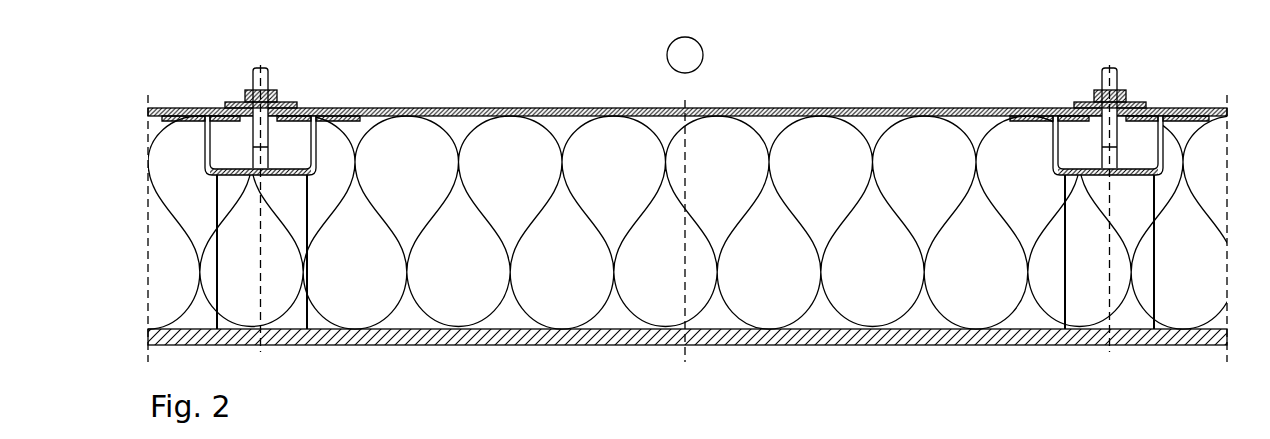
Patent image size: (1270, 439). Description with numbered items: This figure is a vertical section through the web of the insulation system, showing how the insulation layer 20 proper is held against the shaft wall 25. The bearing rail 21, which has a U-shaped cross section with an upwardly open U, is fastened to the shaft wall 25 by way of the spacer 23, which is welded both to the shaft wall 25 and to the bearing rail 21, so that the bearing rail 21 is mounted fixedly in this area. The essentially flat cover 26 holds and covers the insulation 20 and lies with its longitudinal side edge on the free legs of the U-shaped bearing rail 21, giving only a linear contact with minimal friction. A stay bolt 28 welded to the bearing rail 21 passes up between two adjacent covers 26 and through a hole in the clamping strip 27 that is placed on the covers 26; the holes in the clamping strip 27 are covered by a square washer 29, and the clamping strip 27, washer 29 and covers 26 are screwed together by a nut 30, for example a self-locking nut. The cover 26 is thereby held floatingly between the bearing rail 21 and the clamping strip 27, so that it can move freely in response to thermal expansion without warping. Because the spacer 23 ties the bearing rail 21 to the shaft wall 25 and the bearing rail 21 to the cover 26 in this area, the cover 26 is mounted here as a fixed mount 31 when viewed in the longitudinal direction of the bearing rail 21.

The insulation layer 20 is at (822, 280).
The bearing rail 21 is at (203, 151).
The spacer 23 is at (280, 300).
The shaft wall 25 is at (607, 345).
The cover 26 is at (157, 106).
The clamping strip 27 is at (202, 110).
The stay bolt 28 is at (258, 78).
The washer 29 is at (295, 105).
The nut 30 is at (278, 95).
The fixed mount 31 is at (687, 199).